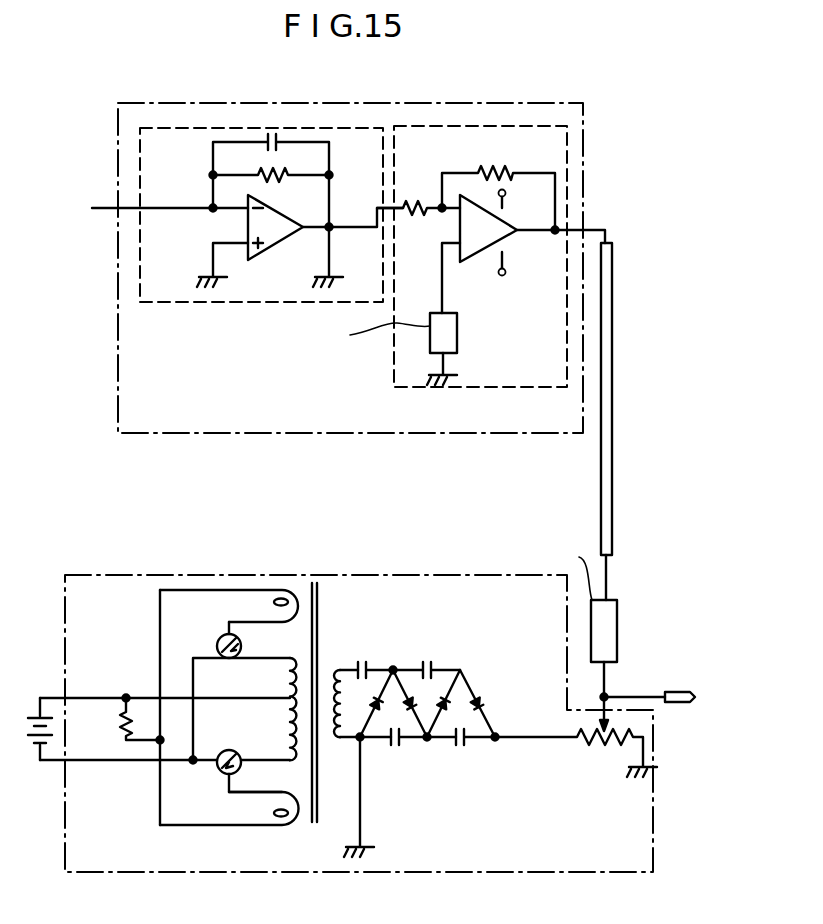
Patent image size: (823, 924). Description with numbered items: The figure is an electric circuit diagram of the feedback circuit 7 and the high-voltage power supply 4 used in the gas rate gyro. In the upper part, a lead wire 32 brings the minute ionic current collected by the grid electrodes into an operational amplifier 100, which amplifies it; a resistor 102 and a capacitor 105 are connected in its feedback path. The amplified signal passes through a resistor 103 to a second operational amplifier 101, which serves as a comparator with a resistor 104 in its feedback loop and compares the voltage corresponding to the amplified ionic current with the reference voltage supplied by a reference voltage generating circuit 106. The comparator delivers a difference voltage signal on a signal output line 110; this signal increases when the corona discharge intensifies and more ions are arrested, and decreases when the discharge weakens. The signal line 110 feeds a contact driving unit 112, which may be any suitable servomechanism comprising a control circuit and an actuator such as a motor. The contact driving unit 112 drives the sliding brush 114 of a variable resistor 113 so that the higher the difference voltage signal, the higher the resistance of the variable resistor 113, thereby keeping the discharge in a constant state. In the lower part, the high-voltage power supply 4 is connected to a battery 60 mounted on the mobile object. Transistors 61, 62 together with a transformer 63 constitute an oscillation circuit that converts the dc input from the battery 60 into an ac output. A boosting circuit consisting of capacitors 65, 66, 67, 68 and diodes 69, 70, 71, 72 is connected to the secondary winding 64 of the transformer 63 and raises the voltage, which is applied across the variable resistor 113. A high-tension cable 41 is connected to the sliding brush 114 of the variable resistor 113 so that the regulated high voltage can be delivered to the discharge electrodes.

The feedback circuit 7 is at (388, 103).
The lead wire 32 is at (116, 209).
The operational amplifier 100 is at (270, 233).
The operational amplifier 101 is at (465, 245).
The resistor 102 is at (288, 172).
The resistor 103 is at (411, 200).
The resistor 104 is at (495, 173).
The capacitor 105 is at (272, 134).
The reference voltage generating circuit 106 is at (457, 325).
The signal output line 110 is at (612, 272).
The contact driving unit 112 is at (605, 620).
The variable resistor 113 is at (592, 745).
The sliding brush 114 is at (603, 721).
The high-tension cable 41 is at (680, 692).
The high-voltage power supply 4 is at (653, 803).
The battery 60 is at (55, 730).
The transistor 61 is at (219, 640).
The transistor 62 is at (229, 750).
The transformer 63 is at (318, 621).
The secondary winding 64 is at (342, 685).
The capacitor 65 is at (361, 662).
The capacitor 66 is at (427, 661).
The capacitor 67 is at (393, 746).
The capacitor 68 is at (460, 746).
The diode 69 is at (373, 700).
The diode 70 is at (406, 708).
The diode 71 is at (445, 698).
The diode 72 is at (478, 700).